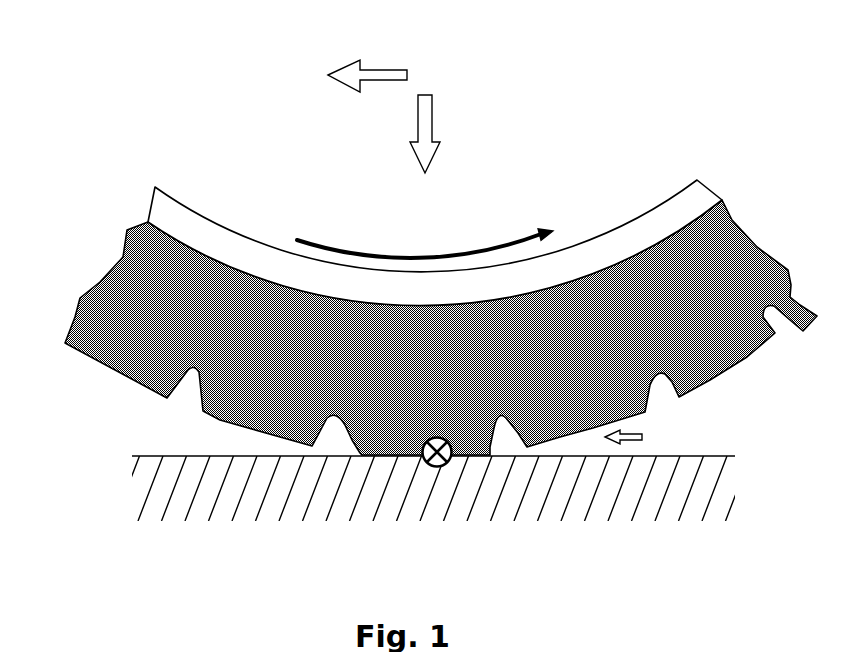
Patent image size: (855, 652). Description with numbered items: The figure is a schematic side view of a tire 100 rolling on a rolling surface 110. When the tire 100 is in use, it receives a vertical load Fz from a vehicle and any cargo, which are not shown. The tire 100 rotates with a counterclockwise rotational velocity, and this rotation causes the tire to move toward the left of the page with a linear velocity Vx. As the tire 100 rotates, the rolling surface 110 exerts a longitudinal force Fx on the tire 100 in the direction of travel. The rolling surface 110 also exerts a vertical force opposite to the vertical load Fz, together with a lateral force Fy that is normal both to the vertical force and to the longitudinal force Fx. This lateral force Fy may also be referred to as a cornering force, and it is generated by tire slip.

The tire 100 is at (133, 278).
The rolling surface 110 is at (688, 500).
The linear velocity Vx is at (367, 57).
The vertical load Fz is at (437, 134).
The longitudinal force Fx is at (641, 434).
The lateral force Fy is at (460, 474).